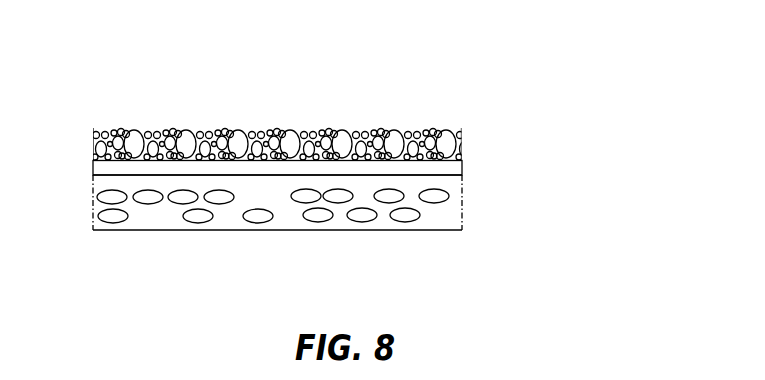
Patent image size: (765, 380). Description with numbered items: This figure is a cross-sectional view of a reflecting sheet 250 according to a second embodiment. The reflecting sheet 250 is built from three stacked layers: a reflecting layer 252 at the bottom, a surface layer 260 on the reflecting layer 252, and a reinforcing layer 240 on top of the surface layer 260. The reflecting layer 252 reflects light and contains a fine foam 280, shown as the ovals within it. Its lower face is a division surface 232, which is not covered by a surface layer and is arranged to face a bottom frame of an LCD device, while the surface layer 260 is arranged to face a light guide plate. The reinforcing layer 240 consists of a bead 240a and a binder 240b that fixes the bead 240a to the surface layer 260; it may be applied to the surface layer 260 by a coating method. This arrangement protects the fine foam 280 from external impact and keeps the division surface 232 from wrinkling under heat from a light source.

The reinforcing layer 240 is at (281, 102).
The bead 240a is at (186, 131).
The binder 240b is at (255, 129).
The reflecting sheet 250 is at (517, 162).
The reflecting layer 252 is at (452, 208).
The surface layer 260 is at (151, 167).
The fine foam 280 is at (256, 216).
The division surface 232 is at (313, 241).